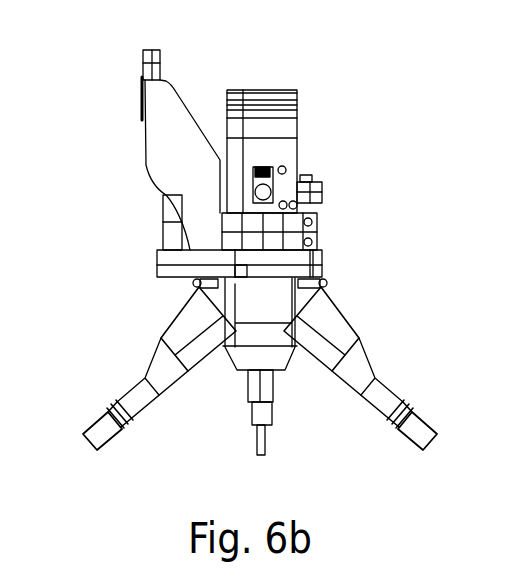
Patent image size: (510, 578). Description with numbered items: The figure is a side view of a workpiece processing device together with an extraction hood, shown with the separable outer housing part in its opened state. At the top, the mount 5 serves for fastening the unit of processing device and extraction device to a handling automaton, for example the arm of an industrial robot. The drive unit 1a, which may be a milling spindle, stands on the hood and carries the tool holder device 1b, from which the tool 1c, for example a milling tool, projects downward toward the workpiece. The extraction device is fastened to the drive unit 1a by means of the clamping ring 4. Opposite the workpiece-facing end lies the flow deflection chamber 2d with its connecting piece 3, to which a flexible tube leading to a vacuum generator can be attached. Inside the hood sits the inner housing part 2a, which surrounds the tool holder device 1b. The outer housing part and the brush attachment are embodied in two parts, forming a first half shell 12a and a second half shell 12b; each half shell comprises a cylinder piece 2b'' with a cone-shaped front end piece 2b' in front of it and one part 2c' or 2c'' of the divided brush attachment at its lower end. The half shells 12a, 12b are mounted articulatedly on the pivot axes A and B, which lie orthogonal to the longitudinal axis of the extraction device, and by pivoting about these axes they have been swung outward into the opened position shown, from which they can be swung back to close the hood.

The mount 5 is at (164, 86).
The drive unit 1a is at (283, 120).
The connecting piece 3 is at (168, 212).
The clamping ring 4 is at (320, 252).
The flow deflection chamber 2d is at (165, 268).
The pivot axis A is at (194, 287).
The pivot axis B is at (326, 281).
The inner housing part 2a is at (223, 353).
The first half shell 12a is at (160, 407).
The part of divided brush attachment 2c' is at (63, 441).
The cylinder piece 2b'' is at (363, 322).
The conical end piece 2b' is at (412, 364).
The second half shell 12b is at (348, 397).
The part of divided brush attachment 2c'' is at (437, 421).
The tool holder device 1b is at (253, 393).
The tool 1c is at (263, 440).